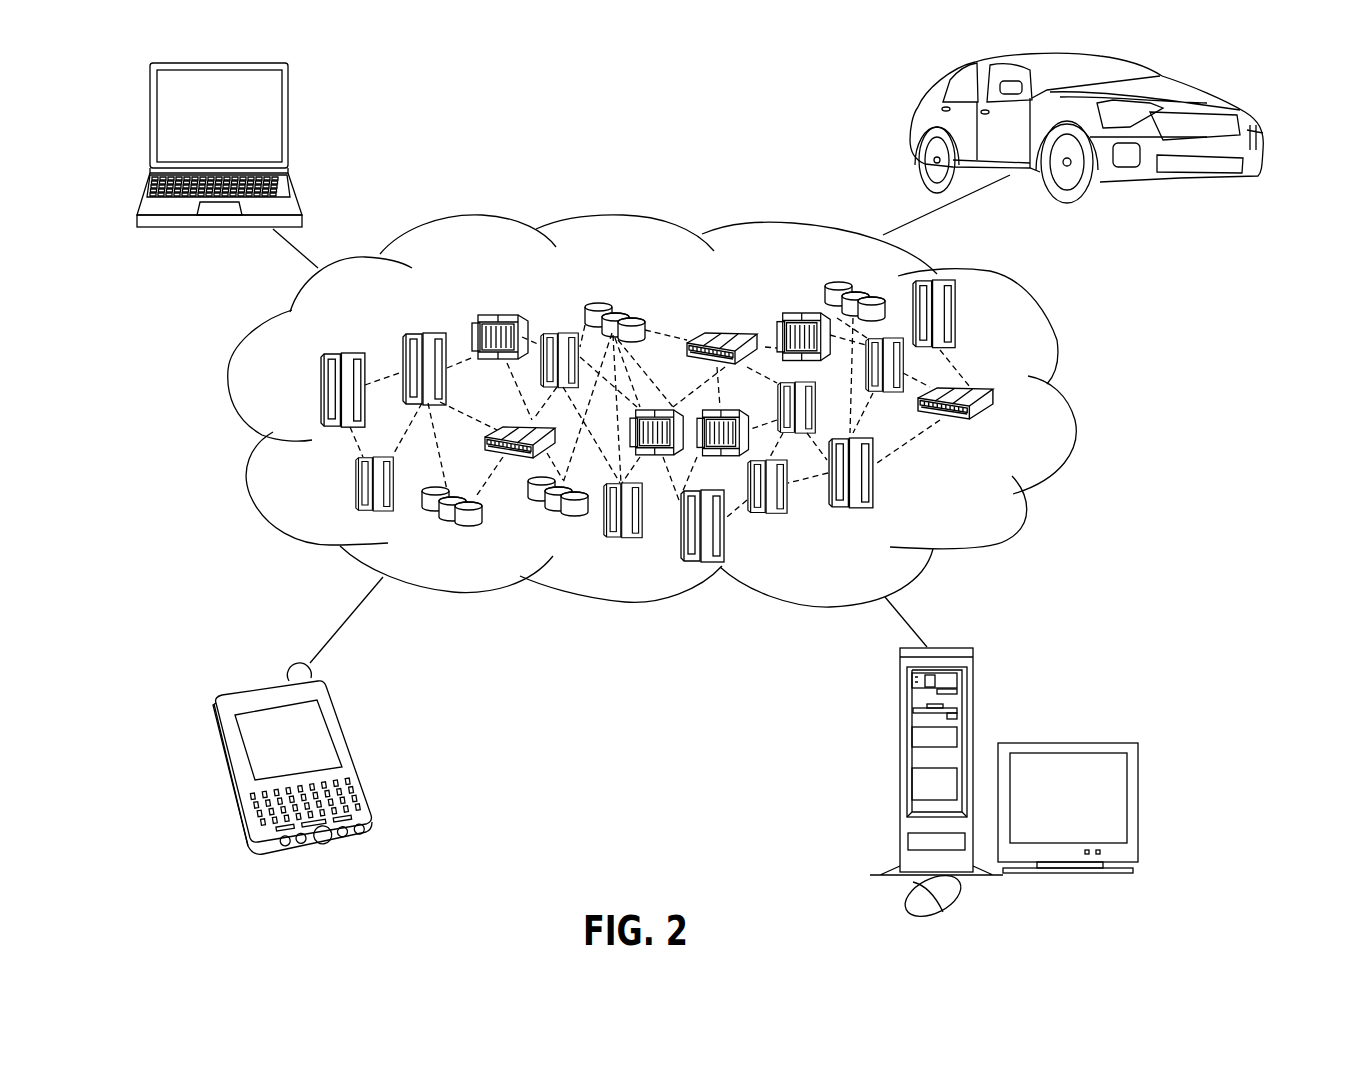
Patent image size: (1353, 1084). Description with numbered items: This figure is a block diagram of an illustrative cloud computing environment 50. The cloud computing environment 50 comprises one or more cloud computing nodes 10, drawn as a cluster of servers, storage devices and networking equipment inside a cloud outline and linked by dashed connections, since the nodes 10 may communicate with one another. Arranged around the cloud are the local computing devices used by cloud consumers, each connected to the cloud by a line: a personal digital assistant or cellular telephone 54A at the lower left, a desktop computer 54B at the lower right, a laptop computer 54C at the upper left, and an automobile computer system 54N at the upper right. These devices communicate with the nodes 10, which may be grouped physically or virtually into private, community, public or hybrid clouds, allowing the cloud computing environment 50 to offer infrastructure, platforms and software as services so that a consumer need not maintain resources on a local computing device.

The cloud computing nodes 10 is at (981, 503).
The cloud computing environment 50 is at (1062, 402).
The personal digital assistant (PDA) or cellular telephone 54A is at (343, 723).
The desktop computer 54B is at (898, 708).
The laptop computer 54C is at (288, 103).
The automobile computer system 54N is at (918, 115).